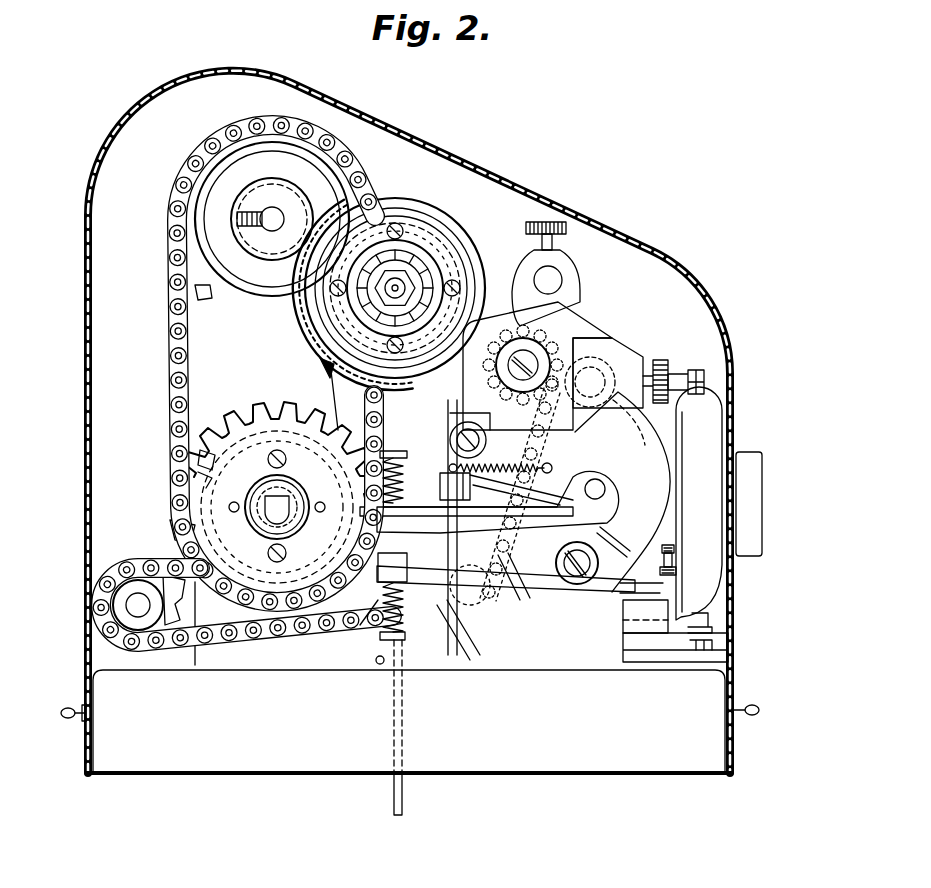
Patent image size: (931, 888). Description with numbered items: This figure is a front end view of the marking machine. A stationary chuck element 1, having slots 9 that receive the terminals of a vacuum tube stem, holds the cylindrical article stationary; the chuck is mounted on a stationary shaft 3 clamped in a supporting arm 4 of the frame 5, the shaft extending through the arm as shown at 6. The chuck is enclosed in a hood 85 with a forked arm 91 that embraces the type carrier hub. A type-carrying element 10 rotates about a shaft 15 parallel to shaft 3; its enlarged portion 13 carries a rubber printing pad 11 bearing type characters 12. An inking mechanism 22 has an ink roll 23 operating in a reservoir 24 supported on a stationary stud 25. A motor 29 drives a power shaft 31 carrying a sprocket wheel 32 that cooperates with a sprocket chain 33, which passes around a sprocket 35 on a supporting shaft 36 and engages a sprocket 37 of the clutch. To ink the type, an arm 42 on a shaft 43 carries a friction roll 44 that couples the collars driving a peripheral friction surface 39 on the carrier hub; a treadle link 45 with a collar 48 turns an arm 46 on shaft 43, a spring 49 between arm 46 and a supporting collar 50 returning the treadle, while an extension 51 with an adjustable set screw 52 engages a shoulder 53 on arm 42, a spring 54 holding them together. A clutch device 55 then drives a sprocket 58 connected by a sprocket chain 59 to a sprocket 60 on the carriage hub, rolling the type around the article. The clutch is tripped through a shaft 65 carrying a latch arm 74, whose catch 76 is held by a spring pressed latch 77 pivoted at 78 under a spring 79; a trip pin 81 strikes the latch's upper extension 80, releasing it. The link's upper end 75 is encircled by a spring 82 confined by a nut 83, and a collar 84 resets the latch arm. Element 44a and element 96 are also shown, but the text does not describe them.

The stationary chuck element 1 is at (245, 188).
The stationary shaft 3 is at (268, 218).
The supporting arm 4 is at (217, 430).
The frame 5 is at (709, 766).
The shaft extension 6 is at (403, 287).
The slots 9 is at (272, 182).
The type-carrying element 10 is at (449, 262).
The rubber printing pad 11 is at (322, 357).
The type characters 12 is at (340, 385).
The enlarged portion 13 is at (450, 227).
The shaft 15 is at (397, 285).
The inking mechanism 22 is at (620, 324).
The ink roll 23 is at (575, 302).
The reservoir 24 is at (597, 357).
The stationary stud 25 is at (583, 268).
The motor 29 is at (703, 417).
The power shaft 31 is at (450, 567).
The sprocket wheel 32 is at (437, 612).
The sprocket chain 33 is at (273, 637).
The sprocket 35 is at (167, 587).
The supporting shaft 36 is at (137, 613).
The sprocket 37 is at (180, 530).
The peripheral friction surface 39 is at (452, 237).
The arm 42 is at (645, 482).
The shaft 43 is at (578, 585).
The friction roll 44 is at (588, 427).
The bolt 44a is at (673, 363).
The treadle link 45 is at (405, 790).
The arm 46 is at (473, 593).
The collar 48 is at (392, 570).
The spring 49 is at (362, 633).
The supporting collar 50 is at (380, 660).
The extension 51 is at (652, 583).
The adjustable set screw 52 is at (650, 543).
The shoulder 53 is at (672, 560).
The spring 54 is at (676, 571).
The clutch device 55 is at (202, 477).
The sprocket 58 is at (208, 458).
The sprocket chain 59 is at (168, 337).
The sprocket 60 is at (200, 290).
The shaft 65 is at (595, 490).
The latch arm 74 is at (505, 580).
The upper end 75 is at (360, 487).
The catch 76 is at (495, 497).
The spring pressed latch 77 is at (450, 480).
The pivot 78 is at (486, 447).
The spring 79 is at (552, 468).
The upper extension 80 is at (398, 346).
The trip pin 81 is at (313, 362).
The spring 82 is at (282, 459).
The collar or nut 83 is at (387, 448).
The collar 84 is at (377, 532).
The hood 85 is at (307, 170).
The forked arm 91 is at (396, 252).
The ring 96 is at (412, 192).